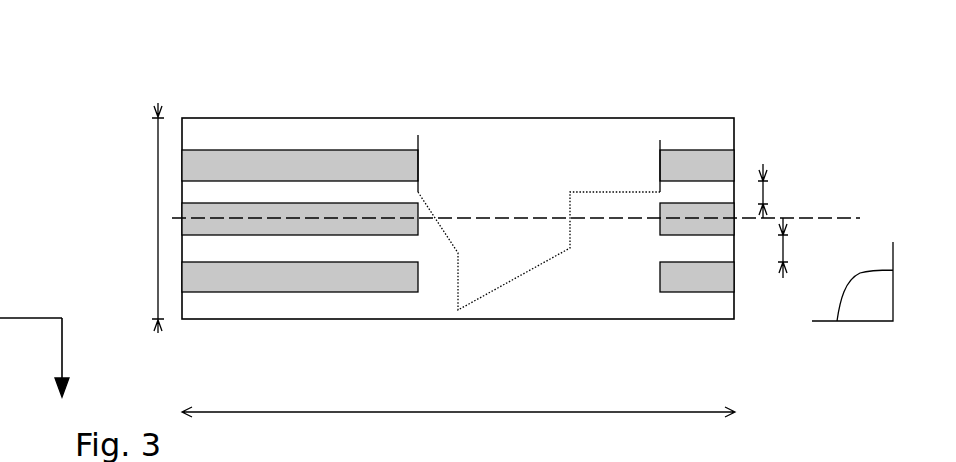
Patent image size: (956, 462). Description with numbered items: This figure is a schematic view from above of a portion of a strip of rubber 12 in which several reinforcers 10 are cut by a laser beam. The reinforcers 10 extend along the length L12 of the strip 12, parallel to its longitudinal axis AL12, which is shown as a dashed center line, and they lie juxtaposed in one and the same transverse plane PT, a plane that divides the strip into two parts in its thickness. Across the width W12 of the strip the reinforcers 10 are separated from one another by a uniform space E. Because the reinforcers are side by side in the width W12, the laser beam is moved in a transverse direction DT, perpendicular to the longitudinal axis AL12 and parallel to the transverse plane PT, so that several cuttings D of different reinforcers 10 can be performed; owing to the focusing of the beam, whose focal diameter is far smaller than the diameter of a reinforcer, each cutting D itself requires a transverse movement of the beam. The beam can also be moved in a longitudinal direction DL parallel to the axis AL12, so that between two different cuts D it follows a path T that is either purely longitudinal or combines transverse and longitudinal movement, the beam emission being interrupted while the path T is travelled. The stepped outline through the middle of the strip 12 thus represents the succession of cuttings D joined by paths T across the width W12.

The reinforcer 10 is at (207, 148).
The strip of rubber 12 is at (650, 114).
The cutting D is at (420, 138).
The path T is at (448, 242).
The space E is at (783, 221).
The width of the strip W12 is at (130, 218).
The length of the strip L12 is at (458, 399).
The longitudinal axis of the strip AL12 is at (812, 217).
The transverse plane PT is at (852, 281).
The longitudinal direction DL is at (31, 301).
The transverse direction DT is at (82, 357).